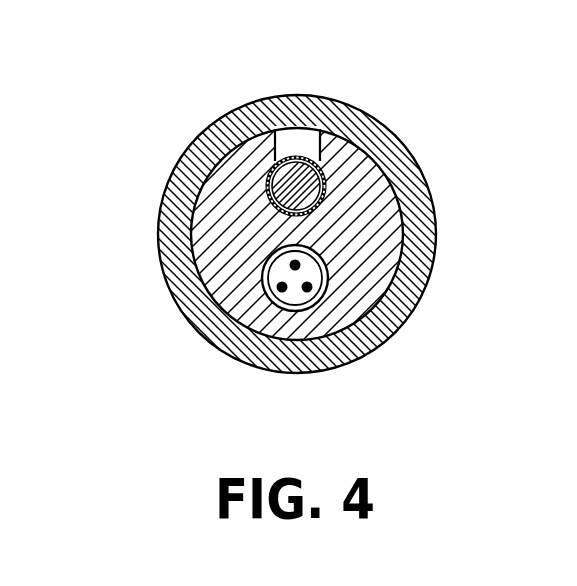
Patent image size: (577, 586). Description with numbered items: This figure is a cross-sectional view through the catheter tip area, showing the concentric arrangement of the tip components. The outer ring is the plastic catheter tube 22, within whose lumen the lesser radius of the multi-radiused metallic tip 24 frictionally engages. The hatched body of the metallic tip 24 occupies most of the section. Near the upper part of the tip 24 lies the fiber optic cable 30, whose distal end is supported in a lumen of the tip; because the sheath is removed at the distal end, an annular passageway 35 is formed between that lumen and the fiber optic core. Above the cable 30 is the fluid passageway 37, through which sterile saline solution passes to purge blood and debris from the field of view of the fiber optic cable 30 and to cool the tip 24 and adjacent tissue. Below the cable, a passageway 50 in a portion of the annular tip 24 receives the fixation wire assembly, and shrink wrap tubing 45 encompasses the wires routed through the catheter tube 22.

The plastic catheter tube 22 is at (420, 232).
The metallic tip 24 is at (223, 253).
The fiber optic cable 30 is at (322, 178).
The annular passageway 35 is at (265, 183).
The fluid passageway 37 is at (295, 142).
The shrink wrap tubing 45 is at (300, 305).
The passageway 50 is at (318, 305).